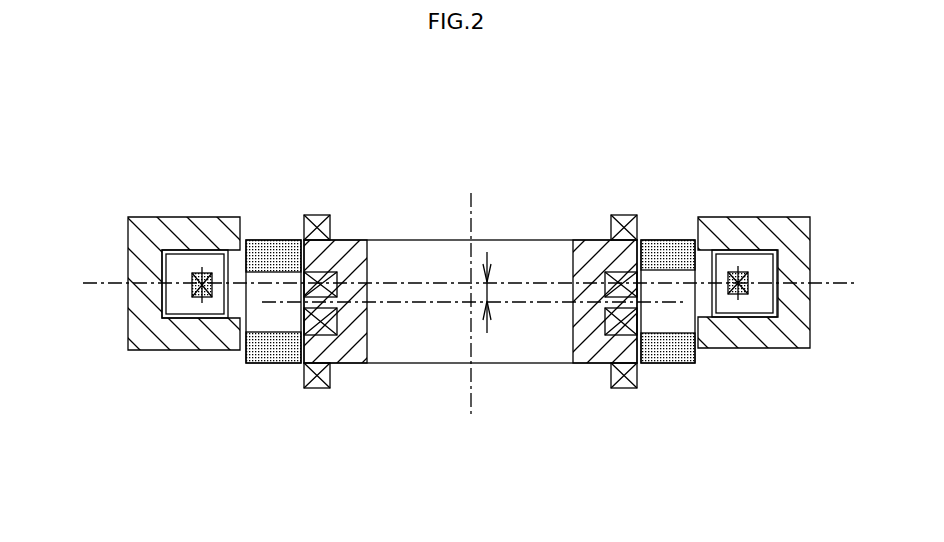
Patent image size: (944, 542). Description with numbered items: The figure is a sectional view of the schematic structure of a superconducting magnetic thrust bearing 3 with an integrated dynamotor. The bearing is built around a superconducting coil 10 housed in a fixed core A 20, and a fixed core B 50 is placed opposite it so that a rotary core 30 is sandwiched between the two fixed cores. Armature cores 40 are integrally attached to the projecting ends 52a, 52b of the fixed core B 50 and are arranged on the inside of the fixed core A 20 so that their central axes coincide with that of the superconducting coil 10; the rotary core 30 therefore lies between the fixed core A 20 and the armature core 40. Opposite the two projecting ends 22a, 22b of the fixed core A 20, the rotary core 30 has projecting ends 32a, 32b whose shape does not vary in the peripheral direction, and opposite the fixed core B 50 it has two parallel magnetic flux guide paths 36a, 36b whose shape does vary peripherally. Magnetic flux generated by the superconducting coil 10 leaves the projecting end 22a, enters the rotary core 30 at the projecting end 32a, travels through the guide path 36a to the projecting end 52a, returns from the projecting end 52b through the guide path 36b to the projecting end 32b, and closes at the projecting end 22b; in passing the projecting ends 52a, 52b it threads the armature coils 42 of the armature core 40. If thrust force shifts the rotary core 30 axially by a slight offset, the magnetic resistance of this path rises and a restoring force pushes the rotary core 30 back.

The superconducting magnetic thrust bearing with integrated dynamotor 3 is at (538, 158).
The superconducting coil 10 is at (180, 258).
The fixed core A 20 is at (127, 247).
The projecting end of fixed core A 22a is at (246, 240).
The projecting end of fixed core A 22b is at (236, 332).
The rotary core 30 is at (262, 301).
The projecting end of rotary core 32a is at (273, 240).
The projecting end of rotary core 32b is at (267, 363).
The magnetic flux guide path 36a is at (283, 240).
The magnetic flux guide path 36b is at (285, 365).
The armature core 40 is at (328, 240).
The armature coil 42 is at (315, 215).
The fixed core B 50 is at (362, 242).
The projecting end of fixed core B 52a is at (293, 240).
The projecting end of fixed core B 52b is at (295, 365).